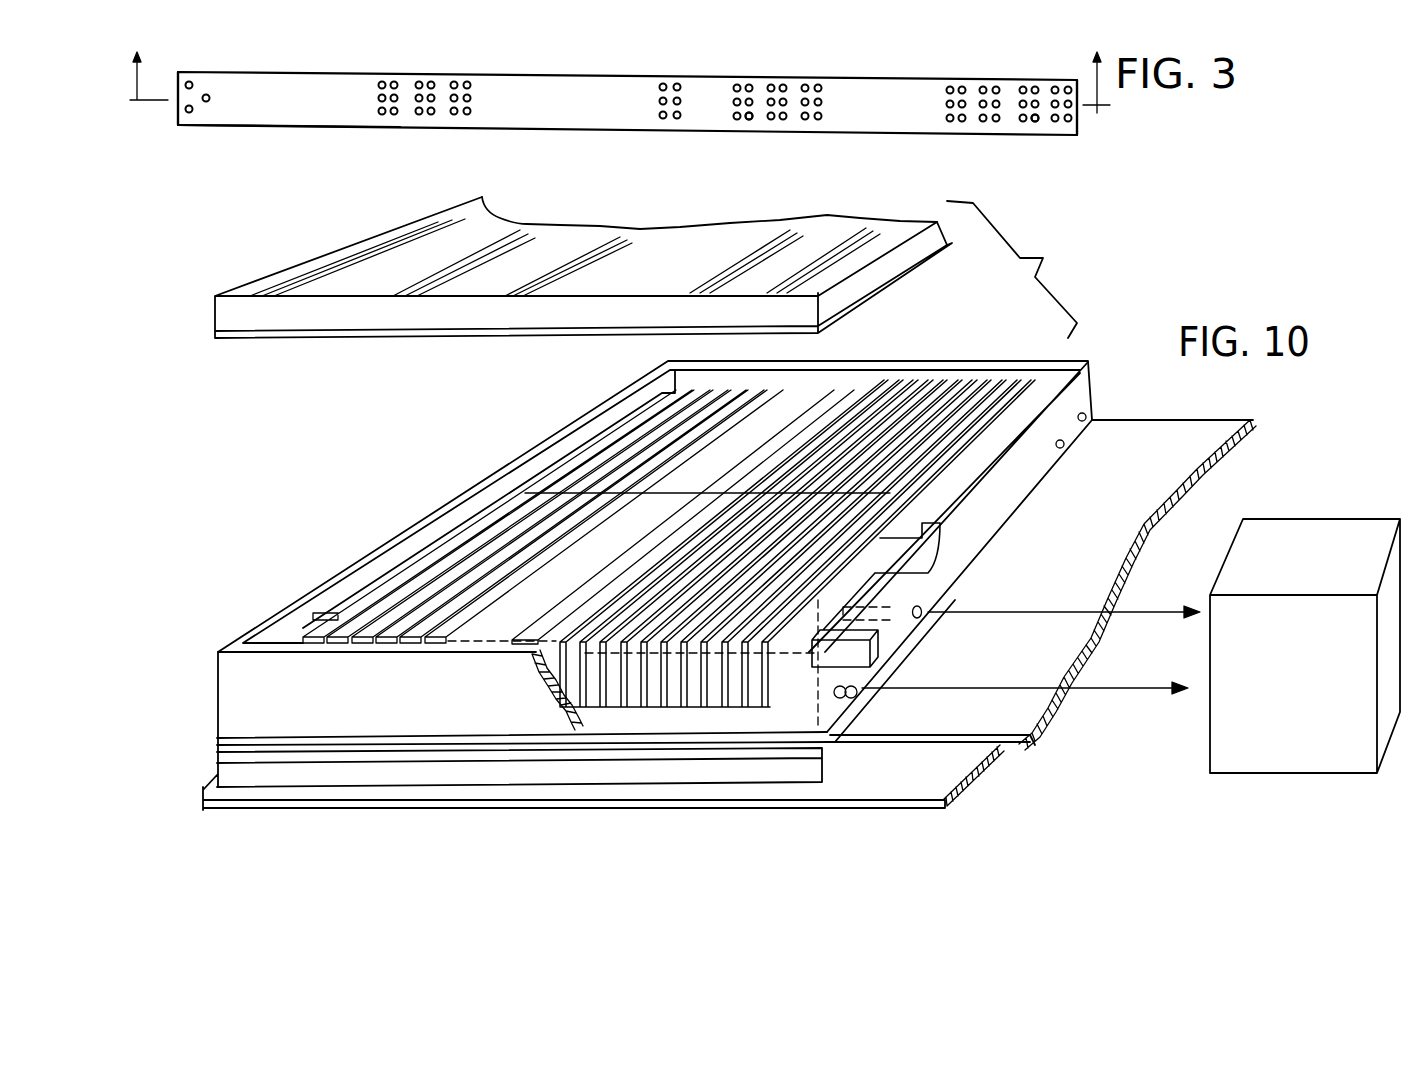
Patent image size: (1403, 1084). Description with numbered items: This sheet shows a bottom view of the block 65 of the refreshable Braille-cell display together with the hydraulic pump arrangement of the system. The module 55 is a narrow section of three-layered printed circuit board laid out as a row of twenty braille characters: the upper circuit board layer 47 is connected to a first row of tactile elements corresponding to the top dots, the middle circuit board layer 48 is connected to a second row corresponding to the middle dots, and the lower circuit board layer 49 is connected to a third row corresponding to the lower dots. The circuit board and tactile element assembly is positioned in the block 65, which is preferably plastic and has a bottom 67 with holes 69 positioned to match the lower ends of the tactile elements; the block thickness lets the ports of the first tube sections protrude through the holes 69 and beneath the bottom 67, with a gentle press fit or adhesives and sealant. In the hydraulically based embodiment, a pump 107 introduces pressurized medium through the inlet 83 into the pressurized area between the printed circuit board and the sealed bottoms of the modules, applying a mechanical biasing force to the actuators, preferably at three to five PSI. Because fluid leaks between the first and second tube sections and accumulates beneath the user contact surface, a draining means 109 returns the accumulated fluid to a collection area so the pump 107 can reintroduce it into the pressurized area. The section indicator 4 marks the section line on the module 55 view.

In FIG. 3, the section line 4- 4 is at (618, 67).
In FIG. 3, the upper circuit board layer 47 is at (178, 66).
In FIG. 3, the middle circuit board layer 48 is at (168, 110).
In FIG. 3, the lower circuit board layer 49 is at (168, 128).
In FIG. 3, the module 55 is at (447, 80).
In FIG. 3, the block 65 is at (800, 78).
In FIG. 3, the holes 69 is at (750, 120).
In FIG. 3, the bottom 67 is at (1070, 130).
In FIG. 10, the inlet 83 is at (924, 608).
In FIG. 10, the draining means 109 is at (852, 698).
In FIG. 10, the pump 107 is at (1226, 694).